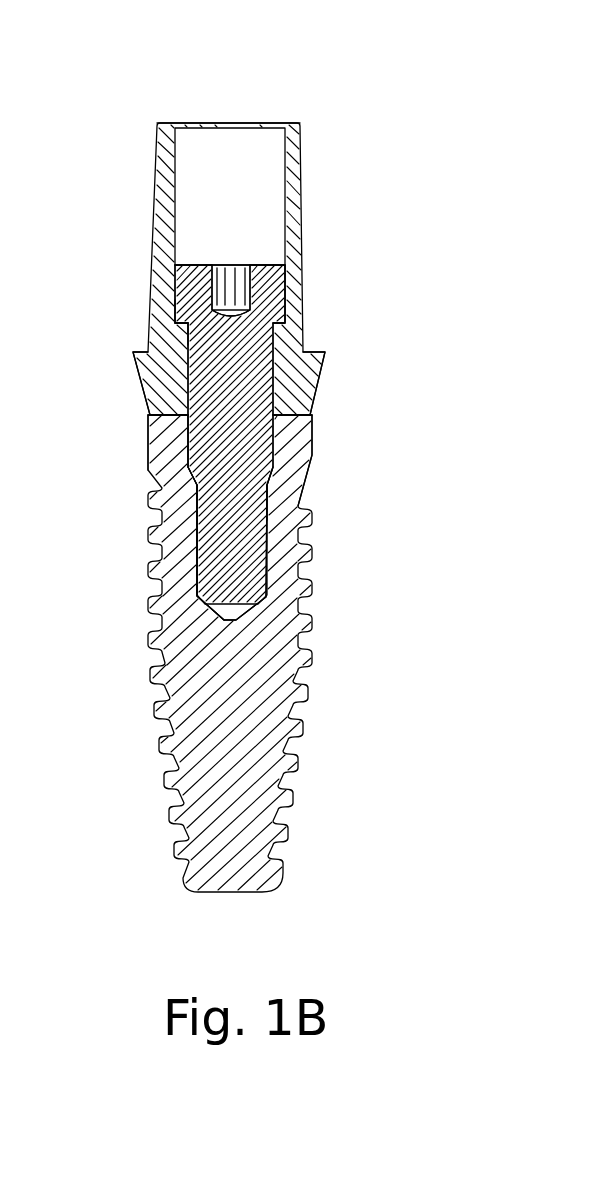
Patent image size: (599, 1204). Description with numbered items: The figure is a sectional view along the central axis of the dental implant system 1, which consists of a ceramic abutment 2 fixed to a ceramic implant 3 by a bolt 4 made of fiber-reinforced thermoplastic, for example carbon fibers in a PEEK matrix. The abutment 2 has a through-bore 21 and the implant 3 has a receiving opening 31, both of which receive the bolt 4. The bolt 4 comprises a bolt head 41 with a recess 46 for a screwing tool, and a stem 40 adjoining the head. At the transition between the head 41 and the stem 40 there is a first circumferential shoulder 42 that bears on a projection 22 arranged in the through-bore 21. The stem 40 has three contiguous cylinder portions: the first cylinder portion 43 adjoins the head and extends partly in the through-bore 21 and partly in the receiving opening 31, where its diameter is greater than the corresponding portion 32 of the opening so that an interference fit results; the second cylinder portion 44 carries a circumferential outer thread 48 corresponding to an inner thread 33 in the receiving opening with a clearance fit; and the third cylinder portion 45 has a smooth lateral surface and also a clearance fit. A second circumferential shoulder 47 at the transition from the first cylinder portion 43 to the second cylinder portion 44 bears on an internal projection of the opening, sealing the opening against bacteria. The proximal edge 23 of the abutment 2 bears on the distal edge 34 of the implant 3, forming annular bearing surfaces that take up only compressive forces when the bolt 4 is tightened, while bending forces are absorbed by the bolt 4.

The dental implant assembly 1 is at (168, 90).
The abutment 2 is at (300, 188).
The through-bore 21 is at (250, 147).
The projection 22 is at (177, 318).
The proximal edge 23 is at (167, 413).
The implant 3 is at (317, 553).
The receiving opening 31 is at (250, 502).
The corresponding portion of the receiving opening 32 is at (187, 448).
The inner thread 33 is at (197, 538).
The distal edge 34 is at (157, 417).
The bolt 4 is at (258, 352).
The stem 40 is at (186, 383).
The bolt head 41 is at (283, 283).
The first circumferential shoulder 42 is at (182, 330).
The first cylinder portion 43 is at (276, 382).
The second cylinder portion 44 is at (193, 503).
The third cylinder portion 45 is at (197, 575).
The recess 46 is at (227, 266).
The second circumferential shoulder 47 is at (303, 462).
The circumferential outer thread 48 is at (272, 500).